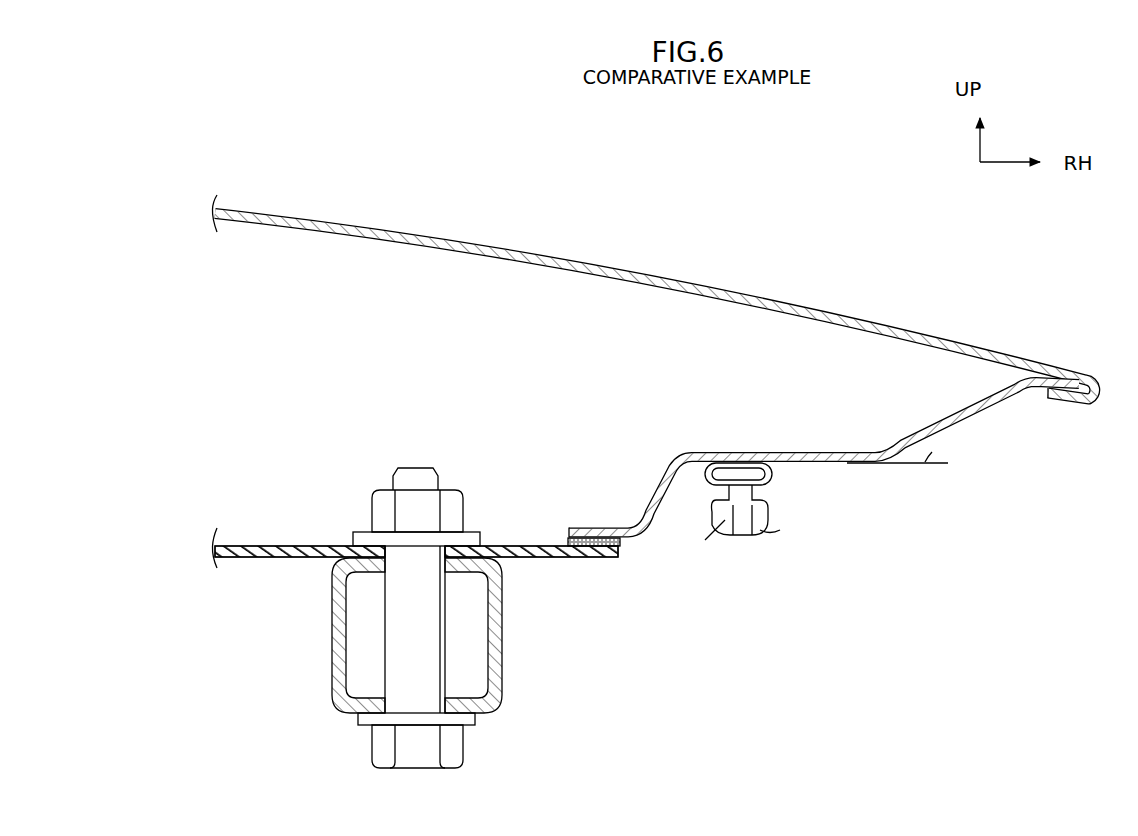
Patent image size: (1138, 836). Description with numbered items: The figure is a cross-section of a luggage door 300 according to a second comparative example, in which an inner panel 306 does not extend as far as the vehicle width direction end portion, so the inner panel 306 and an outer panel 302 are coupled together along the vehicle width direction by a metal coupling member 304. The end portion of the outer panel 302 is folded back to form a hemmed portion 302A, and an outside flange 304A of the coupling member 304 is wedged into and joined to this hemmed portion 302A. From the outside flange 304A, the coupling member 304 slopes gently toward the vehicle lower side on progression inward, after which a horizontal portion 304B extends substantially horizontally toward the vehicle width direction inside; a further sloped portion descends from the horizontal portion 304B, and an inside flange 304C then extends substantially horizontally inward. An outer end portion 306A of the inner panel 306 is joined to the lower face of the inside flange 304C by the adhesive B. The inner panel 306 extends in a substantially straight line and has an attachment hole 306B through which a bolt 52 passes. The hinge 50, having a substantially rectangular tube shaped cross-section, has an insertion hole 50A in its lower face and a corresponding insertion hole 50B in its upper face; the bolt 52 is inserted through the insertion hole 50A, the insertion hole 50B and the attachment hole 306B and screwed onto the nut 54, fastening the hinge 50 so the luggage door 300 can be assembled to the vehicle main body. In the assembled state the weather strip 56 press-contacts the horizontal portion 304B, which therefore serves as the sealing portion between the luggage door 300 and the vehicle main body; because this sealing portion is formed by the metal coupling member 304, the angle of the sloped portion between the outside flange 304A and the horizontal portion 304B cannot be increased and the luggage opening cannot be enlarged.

The luggage door 300 is at (678, 182).
The outer panel 302 is at (426, 228).
The hemmed portion 302A is at (1095, 406).
The coupling member 304 is at (848, 467).
The outside flange 304A is at (1038, 392).
The horizontal portion 304B is at (798, 465).
The inside flange 304C is at (594, 527).
The inner panel 306 is at (270, 546).
The outer end portion 306A is at (592, 560).
The attachment hole 306B is at (392, 572).
The adhesive B is at (568, 542).
The hinge 50 is at (504, 669).
The insertion hole 50A is at (392, 706).
The insertion hole 50B is at (388, 566).
The bolt 52 is at (466, 744).
The nut 54 is at (450, 490).
The weather strip 56 is at (716, 508).